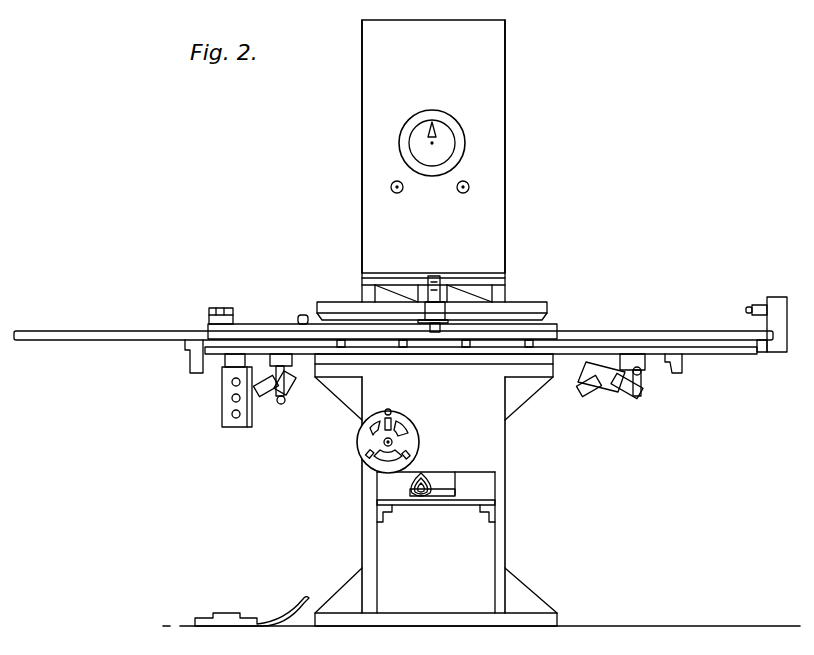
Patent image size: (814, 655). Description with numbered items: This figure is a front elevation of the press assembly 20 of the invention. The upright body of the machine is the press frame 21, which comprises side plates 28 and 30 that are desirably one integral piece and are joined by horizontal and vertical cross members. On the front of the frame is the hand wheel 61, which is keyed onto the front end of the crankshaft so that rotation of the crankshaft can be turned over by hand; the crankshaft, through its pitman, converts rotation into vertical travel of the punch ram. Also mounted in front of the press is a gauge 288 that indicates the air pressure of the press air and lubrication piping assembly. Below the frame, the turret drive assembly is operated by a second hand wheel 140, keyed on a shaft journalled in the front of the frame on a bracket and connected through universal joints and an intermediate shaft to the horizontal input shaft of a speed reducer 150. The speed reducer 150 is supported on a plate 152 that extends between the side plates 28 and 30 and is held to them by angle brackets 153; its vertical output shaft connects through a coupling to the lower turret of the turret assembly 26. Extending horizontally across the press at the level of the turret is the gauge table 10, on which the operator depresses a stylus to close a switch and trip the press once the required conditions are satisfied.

The gauge table 10 is at (584, 329).
The press assembly 20 is at (512, 91).
The press frame 21 is at (382, 558).
The turret assembly 26 is at (528, 298).
The side plate 28 is at (505, 222).
The side plate 30 is at (362, 208).
The hand wheel 61 is at (460, 155).
The hand wheel 140 is at (367, 451).
The speed reducer 150 is at (442, 484).
The plate 152 is at (477, 500).
The angle brackets 153 is at (487, 512).
The gauge 288 is at (400, 193).